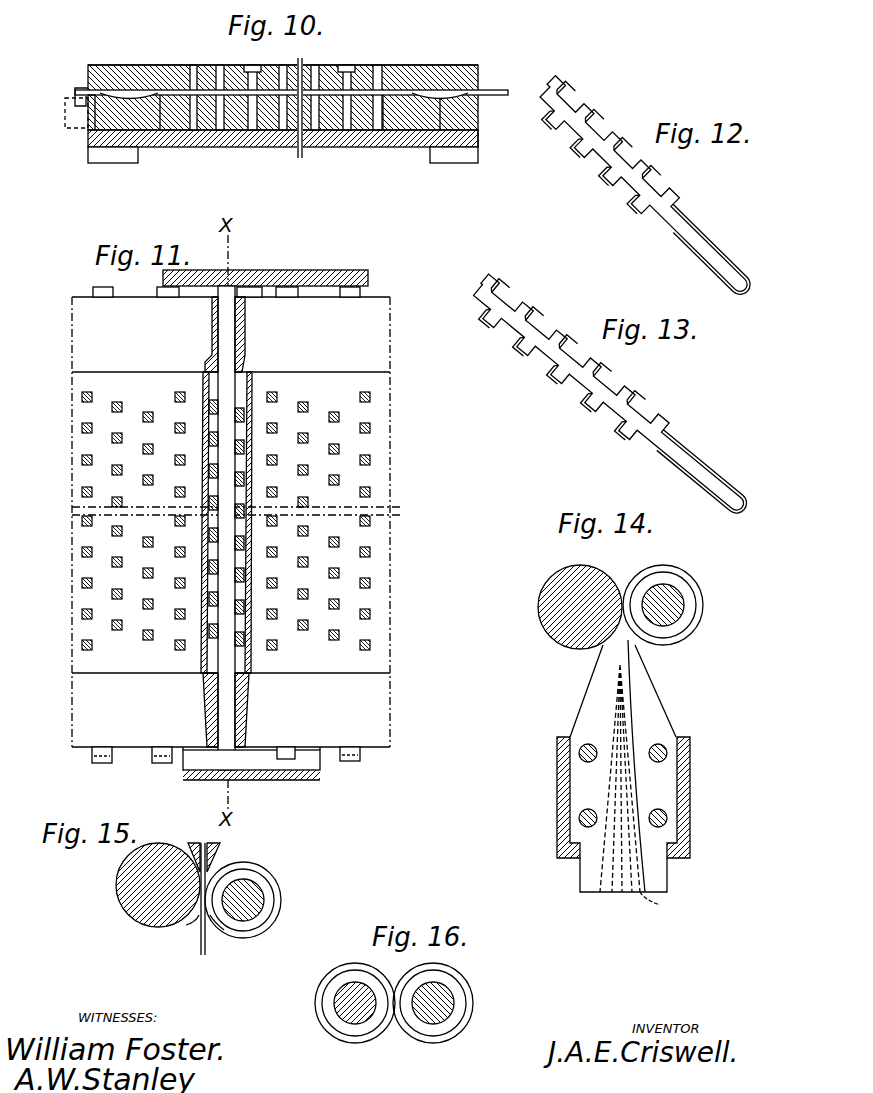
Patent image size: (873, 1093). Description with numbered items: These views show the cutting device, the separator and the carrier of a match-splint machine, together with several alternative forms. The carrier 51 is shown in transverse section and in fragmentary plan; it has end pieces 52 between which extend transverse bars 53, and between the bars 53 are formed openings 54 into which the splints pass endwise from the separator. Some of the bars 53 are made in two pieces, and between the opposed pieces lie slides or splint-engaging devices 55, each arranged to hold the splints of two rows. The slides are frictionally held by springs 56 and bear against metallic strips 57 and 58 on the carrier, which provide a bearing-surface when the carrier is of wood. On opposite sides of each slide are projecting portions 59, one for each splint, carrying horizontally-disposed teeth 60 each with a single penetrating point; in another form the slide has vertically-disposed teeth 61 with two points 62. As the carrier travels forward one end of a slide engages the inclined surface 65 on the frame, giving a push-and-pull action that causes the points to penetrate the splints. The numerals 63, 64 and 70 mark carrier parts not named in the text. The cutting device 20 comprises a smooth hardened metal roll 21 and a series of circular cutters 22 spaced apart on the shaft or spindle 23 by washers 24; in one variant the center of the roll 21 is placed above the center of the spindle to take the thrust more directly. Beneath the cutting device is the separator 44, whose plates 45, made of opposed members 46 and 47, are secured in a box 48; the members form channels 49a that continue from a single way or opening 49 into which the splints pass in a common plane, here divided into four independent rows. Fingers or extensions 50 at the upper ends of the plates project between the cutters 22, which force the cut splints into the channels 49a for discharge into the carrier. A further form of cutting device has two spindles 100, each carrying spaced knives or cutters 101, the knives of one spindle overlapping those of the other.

In FIG. 14, the cutting device 20 is at (623, 560).
In FIG. 14, the metal roll 21 is at (545, 628).
In FIG. 15, the metal roll 21 is at (118, 892).
In FIG. 14, the cutters 22 is at (700, 628).
In FIG. 15, the cutters 22 is at (278, 885).
In FIG. 14, the shaft or spindle 23 is at (680, 600).
In FIG. 15, the shaft or spindle 23 is at (252, 918).
In FIG. 14, the washers 24 is at (685, 630).
In FIG. 15, the washers 24 is at (270, 910).
In FIG. 14, the separator 44 is at (595, 797).
In FIG. 14, the plates 45 is at (592, 880).
In FIG. 14, the opposed member 46 is at (585, 768).
In FIG. 14, the opposed member 47 is at (668, 772).
In FIG. 14, the box 48 is at (557, 792).
In FIG. 14, the single way, pass, or opening 49 is at (638, 660).
In FIG. 15, the single way, pass, or opening 49 is at (205, 950).
In FIG. 14, the channels, openings, or ways 49a is at (666, 907).
In FIG. 14, the fingers or extensions 50 is at (608, 640).
In FIG. 15, the fingers or extensions 50 is at (196, 928).
In FIG. 10, the carrier 51 is at (283, 118).
In FIG. 11, the carrier 51 is at (409, 410).
In FIG. 10, the end pieces 52 is at (110, 66).
In FIG. 11, the end pieces 52 is at (72, 350).
In FIG. 10, the transverse bars 53 is at (268, 140).
In FIG. 10, the openings 54 is at (222, 70).
In FIG. 11, the openings 54 is at (84, 428).
In FIG. 10, the slides or splint-engaging devices 55 is at (490, 97).
In FIG. 11, the slides or splint-engaging devices 55 is at (95, 290).
In FIG. 13, the slides or splint-engaging devices 55 is at (722, 445).
In FIG. 10, the springs 56 is at (140, 135).
In FIG. 10, the metallic strip 57 is at (90, 125).
In FIG. 10, the metallic strip 58 is at (478, 137).
In FIG. 10, the projecting portions 59 is at (348, 68).
In FIG. 12, the projecting portions 59 is at (588, 105).
In FIG. 13, the projecting portions 59 is at (628, 378).
In FIG. 10, the horizontally-disposed teeth 60 is at (252, 68).
In FIG. 12, the horizontally-disposed teeth 60 is at (596, 150).
In FIG. 13, the vertically-disposed teeth 61 is at (546, 353).
In FIG. 13, the points 62 is at (528, 292).
In FIG. 11, the support 63 is at (340, 282).
In FIG. 10, the foot 64 is at (76, 88).
In FIG. 11, the foot 64 is at (112, 765).
In FIG. 10, the inclined surface 65 is at (65, 112).
In FIG. 11, the inclined surface 65 is at (272, 760).
In FIG. 10, the foot 70 is at (103, 152).
In FIG. 16, the spindles 100 is at (448, 992).
In FIG. 16, the knives or cutters 101 is at (318, 1012).